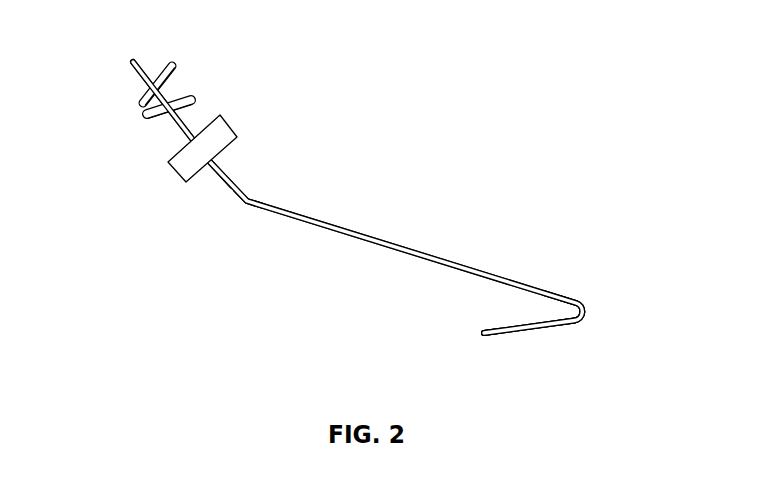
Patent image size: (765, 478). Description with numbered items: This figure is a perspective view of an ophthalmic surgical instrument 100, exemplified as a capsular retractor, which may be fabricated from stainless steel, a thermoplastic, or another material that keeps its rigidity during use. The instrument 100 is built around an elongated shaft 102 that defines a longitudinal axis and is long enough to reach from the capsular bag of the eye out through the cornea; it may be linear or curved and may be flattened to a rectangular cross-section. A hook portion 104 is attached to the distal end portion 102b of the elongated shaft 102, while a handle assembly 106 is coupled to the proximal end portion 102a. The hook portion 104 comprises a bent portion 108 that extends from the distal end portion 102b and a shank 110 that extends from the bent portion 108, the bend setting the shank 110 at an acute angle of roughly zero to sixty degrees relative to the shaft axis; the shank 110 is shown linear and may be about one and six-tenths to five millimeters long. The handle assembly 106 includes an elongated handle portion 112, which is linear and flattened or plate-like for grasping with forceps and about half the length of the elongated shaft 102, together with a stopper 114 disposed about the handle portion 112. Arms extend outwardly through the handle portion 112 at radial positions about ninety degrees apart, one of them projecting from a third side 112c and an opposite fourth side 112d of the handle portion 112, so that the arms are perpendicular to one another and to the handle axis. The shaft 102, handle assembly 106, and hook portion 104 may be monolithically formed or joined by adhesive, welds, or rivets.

The ophthalmic surgical instrument 100 is at (395, 122).
The elongated shaft 102 is at (420, 241).
The proximal end portion 102a is at (257, 208).
The distal end portion 102b is at (566, 295).
The hook portion 104 is at (552, 342).
The handle assembly 106 is at (162, 191).
The bent portion 108 is at (592, 310).
The shank 110 is at (500, 340).
The elongated handle portion 112 is at (211, 182).
The third side 112c is at (128, 72).
The fourth side 112d is at (143, 65).
The stopper 114 is at (234, 127).